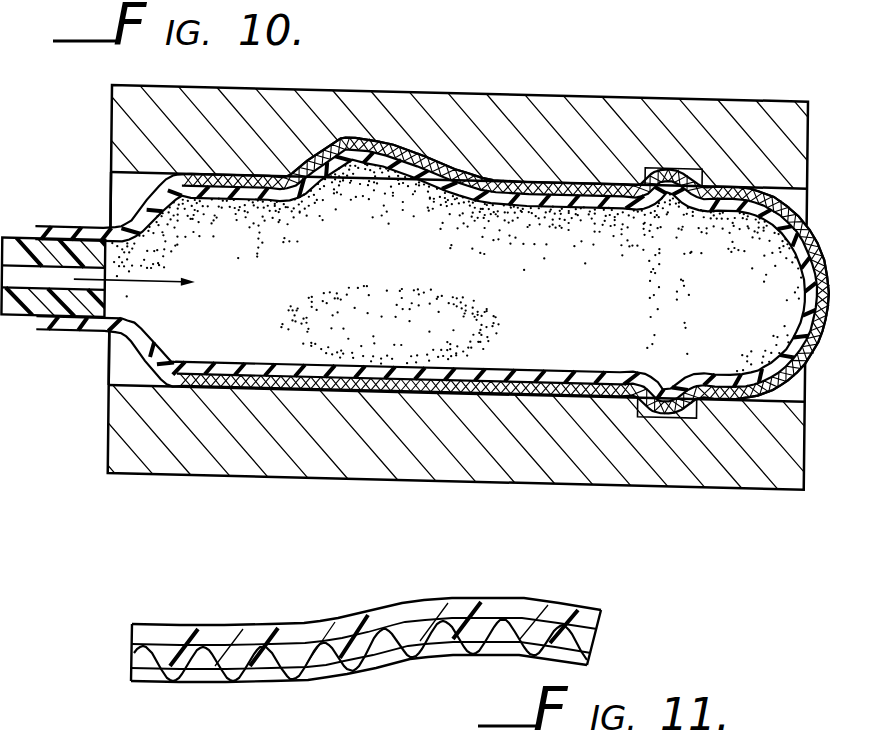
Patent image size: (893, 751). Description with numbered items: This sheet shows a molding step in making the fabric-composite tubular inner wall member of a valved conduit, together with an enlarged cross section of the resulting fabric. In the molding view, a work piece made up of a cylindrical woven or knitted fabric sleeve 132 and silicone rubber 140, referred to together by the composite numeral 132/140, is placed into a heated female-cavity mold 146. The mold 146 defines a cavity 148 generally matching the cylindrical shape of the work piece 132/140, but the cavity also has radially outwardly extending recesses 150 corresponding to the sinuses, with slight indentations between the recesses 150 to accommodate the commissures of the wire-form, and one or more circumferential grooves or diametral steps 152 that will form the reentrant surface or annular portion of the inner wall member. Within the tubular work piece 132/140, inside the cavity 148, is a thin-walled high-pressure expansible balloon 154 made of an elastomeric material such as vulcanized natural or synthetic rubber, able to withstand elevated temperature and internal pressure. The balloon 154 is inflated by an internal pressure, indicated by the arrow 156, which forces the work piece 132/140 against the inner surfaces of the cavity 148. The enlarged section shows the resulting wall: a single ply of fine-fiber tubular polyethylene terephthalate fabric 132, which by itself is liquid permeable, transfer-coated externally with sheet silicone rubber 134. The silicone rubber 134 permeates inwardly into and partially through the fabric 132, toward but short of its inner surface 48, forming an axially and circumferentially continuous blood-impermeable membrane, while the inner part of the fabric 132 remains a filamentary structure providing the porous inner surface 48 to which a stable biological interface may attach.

In FIG. 11, the porous inner surface 48 is at (366, 654).
In FIG. 10, the tubular-woven and/or knitted polyethylene terephthalate fabric 132 is at (430, 150).
In FIG. 11, the tubular-woven and/or knitted polyethylene terephthalate fabric 132 is at (281, 683).
In FIG. 11, the sheet silicone rubber material 134 is at (273, 627).
In FIG. 10, the silicone rubber 140 is at (433, 232).
In FIG. 10, the heated female-cavity mold 146 is at (580, 90).
In FIG. 10, the cavity 148 is at (128, 176).
In FIG. 10, the radially outwardly extending recesses 150 is at (343, 142).
In FIG. 10, the circumferential grooves or diametral steps 152 is at (669, 157).
In FIG. 10, the thin-walled high-pressure expansible balloon 154 is at (820, 225).
In FIG. 10, the internal pressure arrow 156 is at (160, 283).